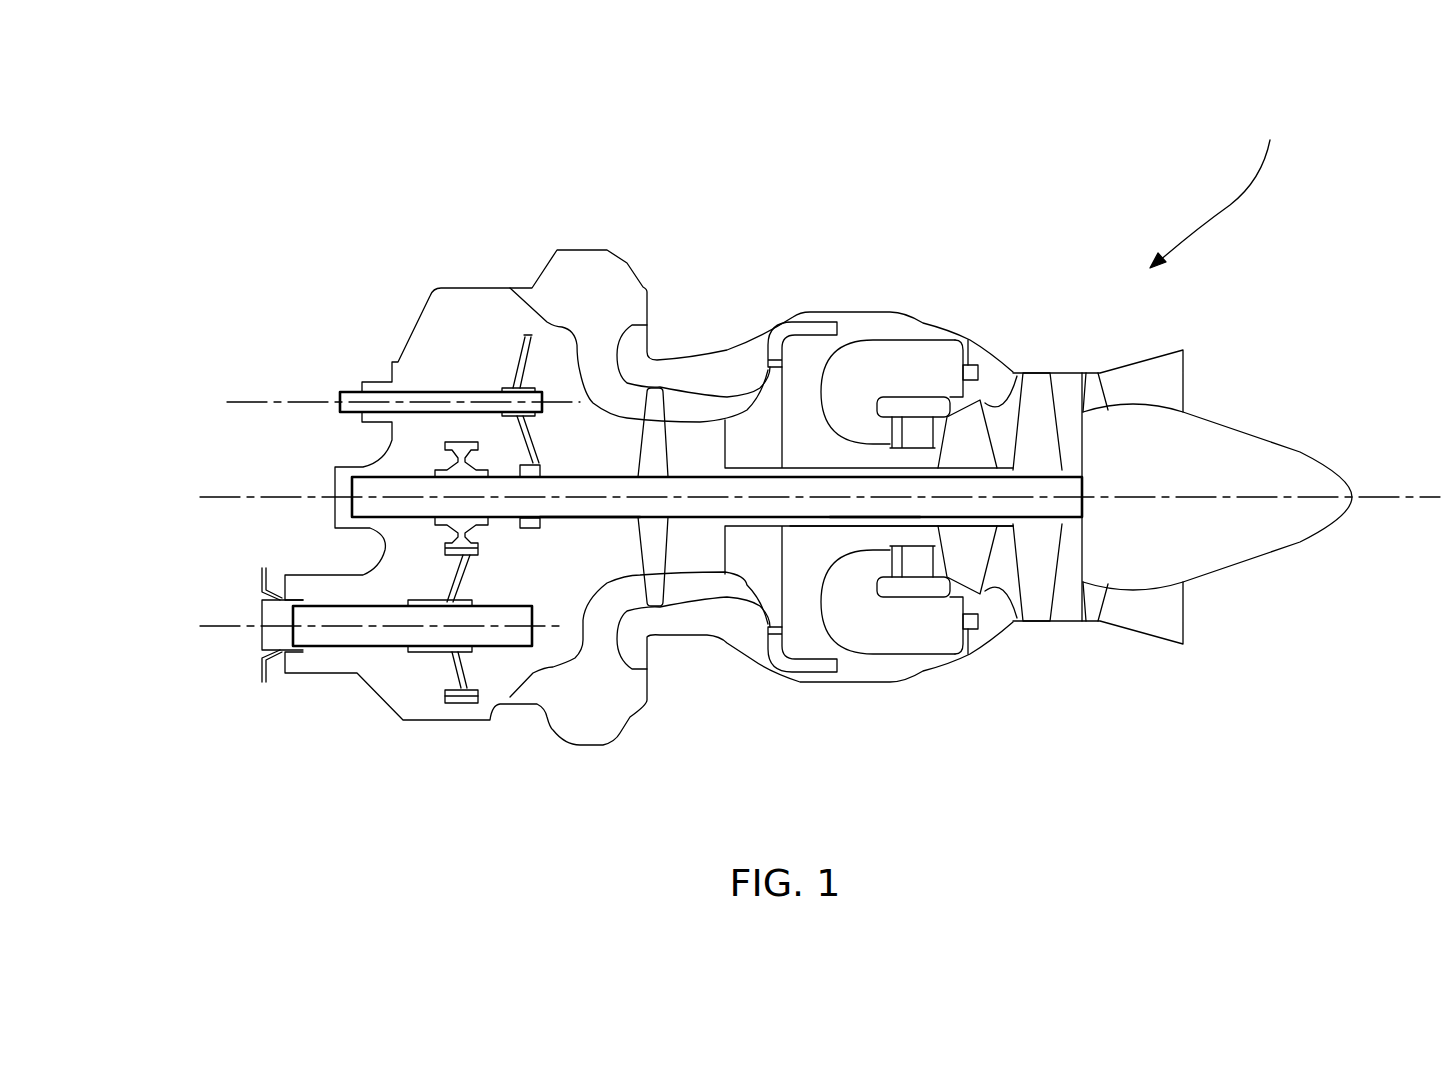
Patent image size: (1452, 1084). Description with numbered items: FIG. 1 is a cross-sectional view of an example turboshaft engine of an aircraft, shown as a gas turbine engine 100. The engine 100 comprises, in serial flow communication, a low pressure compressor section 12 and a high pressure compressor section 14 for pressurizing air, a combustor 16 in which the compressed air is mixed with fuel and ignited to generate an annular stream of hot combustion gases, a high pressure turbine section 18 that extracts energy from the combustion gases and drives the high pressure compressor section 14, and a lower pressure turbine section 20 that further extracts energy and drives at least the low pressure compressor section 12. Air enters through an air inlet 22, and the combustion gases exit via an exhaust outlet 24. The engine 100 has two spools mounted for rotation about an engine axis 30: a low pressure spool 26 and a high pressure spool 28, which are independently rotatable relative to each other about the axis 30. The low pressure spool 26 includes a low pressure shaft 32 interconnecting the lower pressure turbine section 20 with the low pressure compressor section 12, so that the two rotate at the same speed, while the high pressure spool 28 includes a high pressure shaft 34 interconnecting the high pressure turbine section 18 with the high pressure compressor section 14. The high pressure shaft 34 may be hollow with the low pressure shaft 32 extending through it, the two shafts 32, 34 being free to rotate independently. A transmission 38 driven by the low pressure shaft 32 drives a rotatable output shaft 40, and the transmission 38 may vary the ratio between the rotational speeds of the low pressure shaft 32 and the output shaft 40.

The gas turbine engine 100 is at (1223, 184).
The low pressure compressor section 12 is at (653, 407).
The high pressure compressor section 14 is at (757, 433).
The combustor 16 is at (910, 377).
The high pressure turbine section 18 is at (962, 553).
The lower pressure turbine section 20 is at (1040, 397).
The air inlet 22 is at (553, 740).
The exhaust outlet 24 is at (1167, 622).
The low pressure spool 26 is at (680, 518).
The high pressure spool 28 is at (807, 525).
The engine axis 30 is at (1413, 497).
The low pressure shaft 32 is at (583, 513).
The high pressure shaft 34 is at (858, 527).
The transmission 38 is at (405, 544).
The output shaft 40 is at (330, 633).